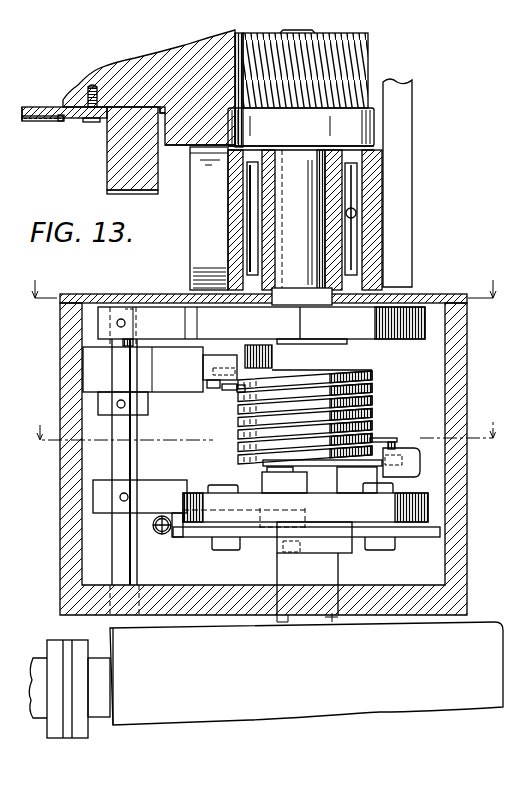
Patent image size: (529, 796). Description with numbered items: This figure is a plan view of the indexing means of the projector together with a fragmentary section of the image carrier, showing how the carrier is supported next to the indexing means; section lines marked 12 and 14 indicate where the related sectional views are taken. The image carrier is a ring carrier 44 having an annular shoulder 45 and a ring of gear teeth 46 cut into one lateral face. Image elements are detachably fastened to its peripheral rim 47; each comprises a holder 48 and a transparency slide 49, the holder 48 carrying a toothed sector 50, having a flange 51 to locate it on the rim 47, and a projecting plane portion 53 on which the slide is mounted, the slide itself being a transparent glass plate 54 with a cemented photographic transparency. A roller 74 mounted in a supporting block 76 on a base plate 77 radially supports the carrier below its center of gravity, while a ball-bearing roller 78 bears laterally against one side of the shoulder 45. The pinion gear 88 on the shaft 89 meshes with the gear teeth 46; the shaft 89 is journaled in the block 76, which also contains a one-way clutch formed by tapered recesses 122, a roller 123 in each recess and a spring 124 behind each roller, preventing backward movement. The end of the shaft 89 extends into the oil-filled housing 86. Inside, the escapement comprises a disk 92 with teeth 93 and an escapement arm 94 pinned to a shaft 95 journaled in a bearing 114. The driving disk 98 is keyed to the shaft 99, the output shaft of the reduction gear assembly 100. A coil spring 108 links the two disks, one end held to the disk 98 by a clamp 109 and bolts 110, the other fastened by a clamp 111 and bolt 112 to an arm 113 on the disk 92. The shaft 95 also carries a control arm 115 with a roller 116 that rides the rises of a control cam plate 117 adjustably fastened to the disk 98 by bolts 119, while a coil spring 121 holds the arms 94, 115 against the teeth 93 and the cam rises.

The section line 12- 12 is at (265, 277).
The section line 14- 14 is at (270, 421).
The ring carrier 44 is at (128, 68).
The annular shoulder 45 is at (187, 148).
The ring of gear teeth 46 is at (238, 33).
The peripheral rim 47 is at (104, 104).
The holder 48 is at (62, 121).
The transparency slide 49 is at (38, 121).
The toothed sector 50 is at (107, 192).
The flange 51 is at (162, 105).
The projecting plane portion 53 is at (50, 107).
The transparent glass plate 54 is at (19, 108).
The roller 74 is at (192, 242).
The supporting block 76 is at (375, 165).
The base plate 77 is at (403, 208).
The ball-bearing roller 78 is at (370, 120).
The housing 86 is at (455, 352).
The pinion gear 88 is at (368, 52).
The shaft 89 is at (320, 31).
The disk 92 is at (390, 340).
The teeth 93 is at (302, 323).
The escapement arm 94 is at (150, 312).
The shaft 95 is at (130, 447).
The disk 98 is at (430, 503).
The shaft 99 is at (352, 598).
The reduction gear assembly 100 is at (473, 627).
The coil spring 108 is at (370, 400).
The clamp 109 is at (410, 452).
The bolts 110 is at (392, 442).
The clamp 111 is at (208, 386).
The bolt 112 is at (225, 391).
The arm 113 is at (266, 357).
The bearing 114 is at (148, 394).
The control arm 115 is at (168, 488).
The roller 116 is at (295, 549).
The control cam plate 117 is at (252, 539).
The bolts 119 is at (371, 558).
The coil spring 121 is at (163, 540).
The tapered recesses 122 is at (362, 193).
The roller 123 is at (353, 245).
The spring 124 is at (357, 215).